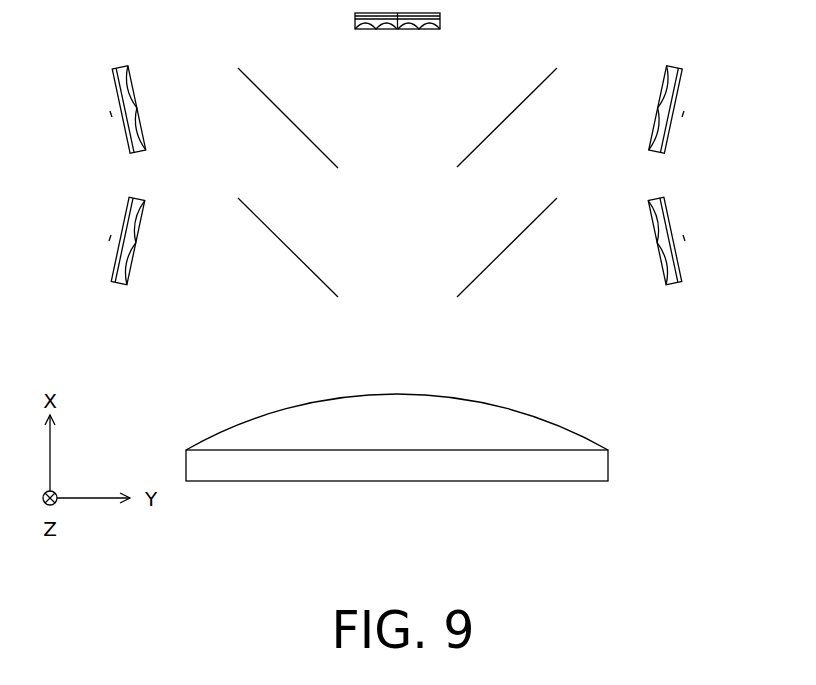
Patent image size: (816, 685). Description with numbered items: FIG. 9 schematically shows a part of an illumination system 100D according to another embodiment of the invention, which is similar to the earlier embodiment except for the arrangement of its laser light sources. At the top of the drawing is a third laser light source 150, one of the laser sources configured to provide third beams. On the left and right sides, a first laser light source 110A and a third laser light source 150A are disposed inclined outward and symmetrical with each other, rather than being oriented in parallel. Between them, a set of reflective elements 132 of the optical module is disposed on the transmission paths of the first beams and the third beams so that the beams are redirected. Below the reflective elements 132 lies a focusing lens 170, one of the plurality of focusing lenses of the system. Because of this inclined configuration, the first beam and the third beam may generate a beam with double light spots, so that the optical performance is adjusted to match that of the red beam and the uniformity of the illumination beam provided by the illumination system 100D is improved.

The third laser light source 150 is at (441, 24).
The third laser light source 150A is at (111, 80).
The first laser light source 110A is at (124, 210).
The reflective element 132 is at (326, 157).
The focusing lens 170 is at (611, 466).
The illumination system 100D is at (725, 516).